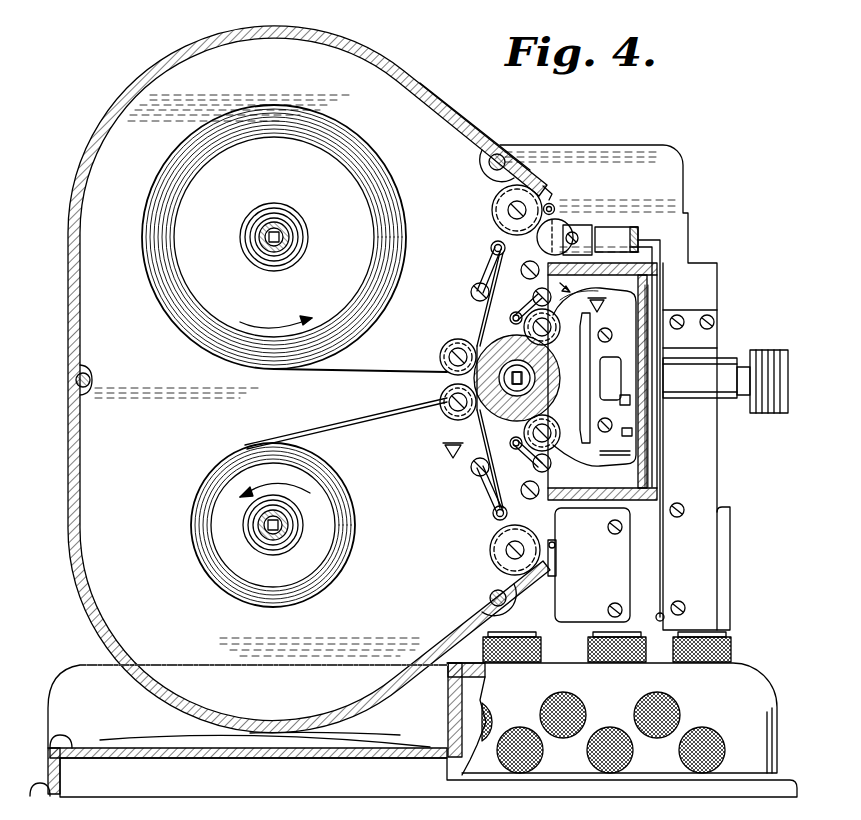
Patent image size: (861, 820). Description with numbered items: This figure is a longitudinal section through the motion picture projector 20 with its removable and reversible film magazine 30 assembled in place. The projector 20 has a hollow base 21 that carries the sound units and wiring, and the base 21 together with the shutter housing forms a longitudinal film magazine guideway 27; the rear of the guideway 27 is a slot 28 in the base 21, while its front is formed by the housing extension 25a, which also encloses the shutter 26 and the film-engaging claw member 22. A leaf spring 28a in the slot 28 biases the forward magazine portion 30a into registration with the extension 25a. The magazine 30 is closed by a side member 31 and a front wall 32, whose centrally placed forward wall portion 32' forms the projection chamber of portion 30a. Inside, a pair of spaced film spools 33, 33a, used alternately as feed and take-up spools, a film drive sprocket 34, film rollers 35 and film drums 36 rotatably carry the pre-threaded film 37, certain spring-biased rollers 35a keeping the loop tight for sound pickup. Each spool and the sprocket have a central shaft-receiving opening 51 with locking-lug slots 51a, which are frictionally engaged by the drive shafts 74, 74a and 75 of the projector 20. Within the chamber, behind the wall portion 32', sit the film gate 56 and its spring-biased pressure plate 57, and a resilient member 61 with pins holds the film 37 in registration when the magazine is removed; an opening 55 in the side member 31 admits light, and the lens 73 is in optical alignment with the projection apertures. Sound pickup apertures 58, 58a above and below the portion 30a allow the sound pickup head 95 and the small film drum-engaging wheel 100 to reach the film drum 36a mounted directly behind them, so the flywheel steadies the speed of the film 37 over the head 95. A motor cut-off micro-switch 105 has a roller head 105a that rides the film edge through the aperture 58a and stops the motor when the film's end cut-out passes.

The motion picture projector 20 is at (672, 148).
The hollow base 21 is at (555, 773).
The film-engaging claw member 22 is at (648, 377).
The housing extension 25a is at (645, 245).
The shutter 26 is at (677, 285).
The film magazine guideway 27 is at (115, 685).
The slot 28 is at (62, 736).
The leaf spring 28a is at (145, 743).
The film magazine 30 is at (92, 124).
The forward magazine portion 30a is at (630, 262).
The side member 31 is at (432, 128).
The front wall 32 is at (675, 386).
The front wall portion 32' is at (678, 386).
The film spool 33 is at (292, 232).
The film spool 33a is at (265, 538).
The film drive sprocket 34 is at (487, 352).
The film rollers 35 is at (524, 282).
The spring-biased rollers 35a is at (491, 243).
The film drums 36 is at (446, 352).
The film guide drum 36a is at (493, 207).
The film 37 is at (358, 374).
The shaft-receiving opening 51 is at (266, 248).
The locking-lug receiving slots 51a is at (277, 228).
The opening 55 is at (539, 374).
The film gate 56 is at (633, 453).
The pressure plate 57 is at (632, 432).
The sound pickup aperture 58 is at (553, 198).
The sound pickup aperture 58a is at (557, 555).
The resilient member 61 is at (630, 402).
The lens 73 is at (758, 362).
The drive shaft 74 is at (285, 240).
The drive shaft 74a is at (280, 525).
The drive shaft 75 is at (543, 367).
The sound pickup head 95 is at (555, 219).
The film drum-engaging wheel 100 is at (556, 206).
The motor cut-off micro-switch 105 is at (577, 608).
The roller head 105a is at (556, 528).